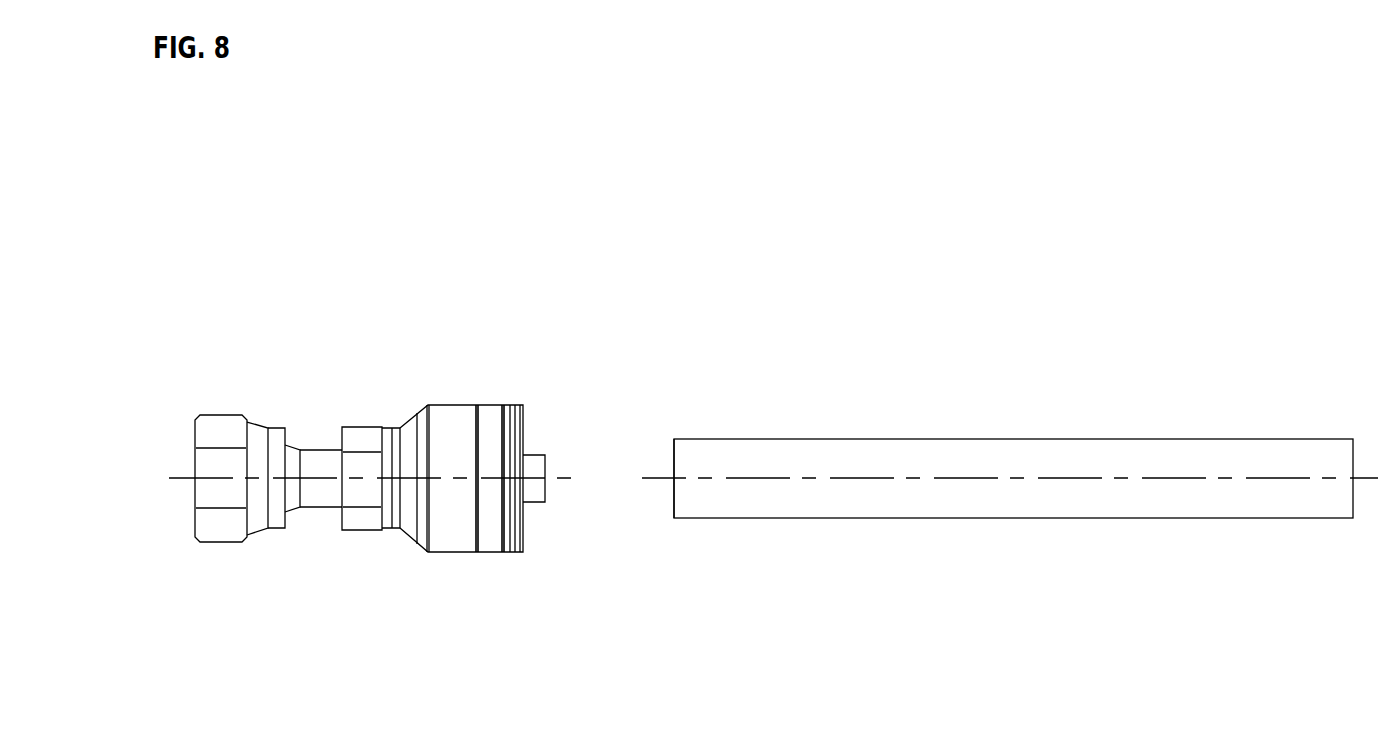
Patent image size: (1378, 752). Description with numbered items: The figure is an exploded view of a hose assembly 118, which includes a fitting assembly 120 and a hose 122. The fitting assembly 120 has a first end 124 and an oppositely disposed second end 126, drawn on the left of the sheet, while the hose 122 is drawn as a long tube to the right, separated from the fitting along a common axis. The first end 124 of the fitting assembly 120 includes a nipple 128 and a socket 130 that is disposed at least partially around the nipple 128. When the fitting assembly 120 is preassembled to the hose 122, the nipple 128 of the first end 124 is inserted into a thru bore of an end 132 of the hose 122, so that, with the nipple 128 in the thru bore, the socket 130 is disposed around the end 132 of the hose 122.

The hose assembly 118 is at (262, 337).
The fitting assembly 120 is at (368, 548).
The hose 122 is at (965, 517).
The first end 124 is at (220, 543).
The second end 126 is at (460, 562).
The nipple 128 is at (540, 452).
The socket 130 is at (487, 407).
The end of the hose 132 is at (683, 517).